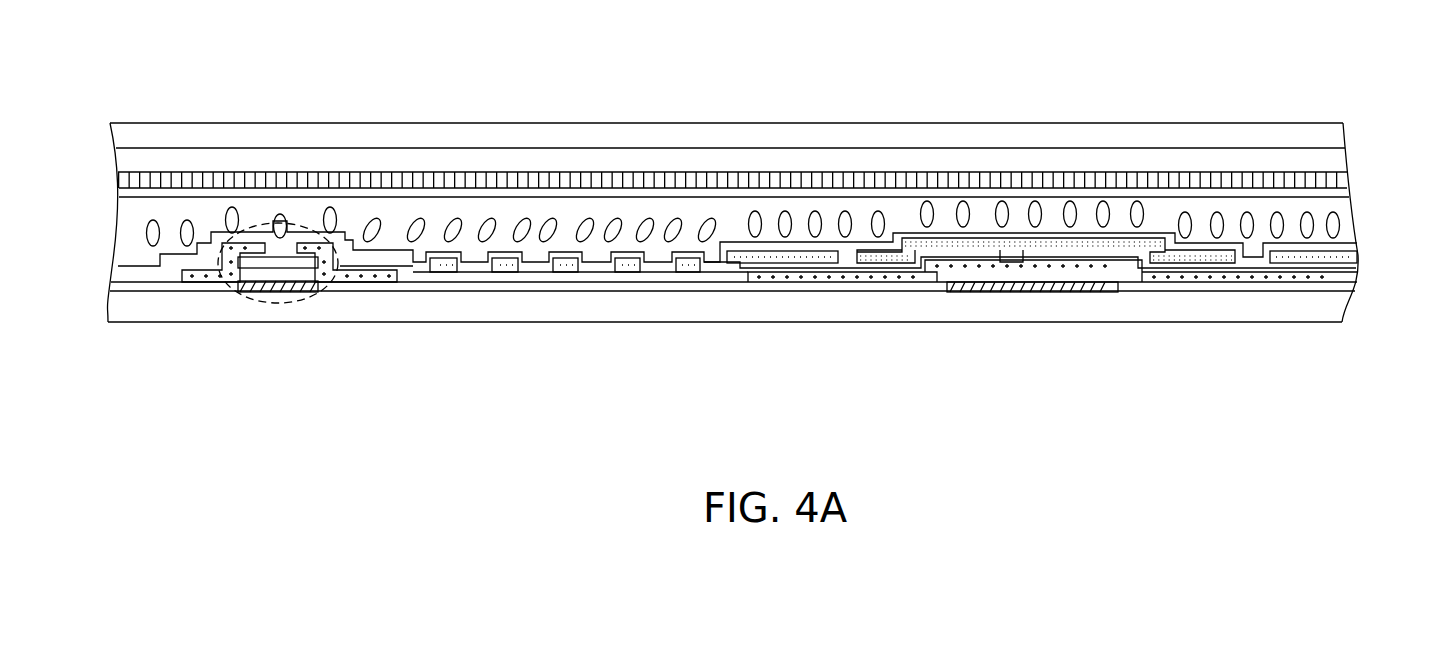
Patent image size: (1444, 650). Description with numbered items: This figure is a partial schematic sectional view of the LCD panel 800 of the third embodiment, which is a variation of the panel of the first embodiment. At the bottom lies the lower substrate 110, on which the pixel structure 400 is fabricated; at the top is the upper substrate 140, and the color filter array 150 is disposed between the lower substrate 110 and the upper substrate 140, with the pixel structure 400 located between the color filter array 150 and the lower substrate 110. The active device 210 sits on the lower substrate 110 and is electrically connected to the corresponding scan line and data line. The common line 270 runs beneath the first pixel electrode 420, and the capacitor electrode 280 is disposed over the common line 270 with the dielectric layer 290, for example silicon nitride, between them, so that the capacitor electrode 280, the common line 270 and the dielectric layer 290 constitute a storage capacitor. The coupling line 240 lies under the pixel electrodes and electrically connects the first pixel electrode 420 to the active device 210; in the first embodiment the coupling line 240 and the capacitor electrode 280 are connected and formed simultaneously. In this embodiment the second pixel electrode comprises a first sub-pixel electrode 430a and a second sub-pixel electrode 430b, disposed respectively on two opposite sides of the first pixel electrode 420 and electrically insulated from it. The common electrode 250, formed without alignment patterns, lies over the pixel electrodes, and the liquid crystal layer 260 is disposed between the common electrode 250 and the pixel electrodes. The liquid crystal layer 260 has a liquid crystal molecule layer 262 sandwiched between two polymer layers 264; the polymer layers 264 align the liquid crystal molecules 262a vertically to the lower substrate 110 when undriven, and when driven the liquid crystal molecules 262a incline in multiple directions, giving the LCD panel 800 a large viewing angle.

The lower substrate 110 is at (138, 307).
The upper substrate 140 is at (231, 140).
The color filter array 150 is at (185, 163).
The active device 210 is at (278, 308).
The coupling line 240 is at (848, 282).
The common electrode 250 is at (318, 170).
The liquid crystal layer 260 is at (466, 60).
The liquid crystal molecule layer 262 is at (396, 210).
The liquid crystal molecules 262a is at (582, 228).
The polymer layers 264 is at (455, 190).
The common line 270 is at (1035, 293).
The capacitor electrode 280 is at (1083, 266).
The dielectric layer 290 is at (740, 288).
The pixel structure 400 is at (1375, 173).
The first pixel electrode 420 is at (995, 250).
The first sub-pixel electrode 430a is at (1300, 252).
The second sub-pixel electrode 430b is at (763, 252).
The LCD panel 800 is at (1284, 475).